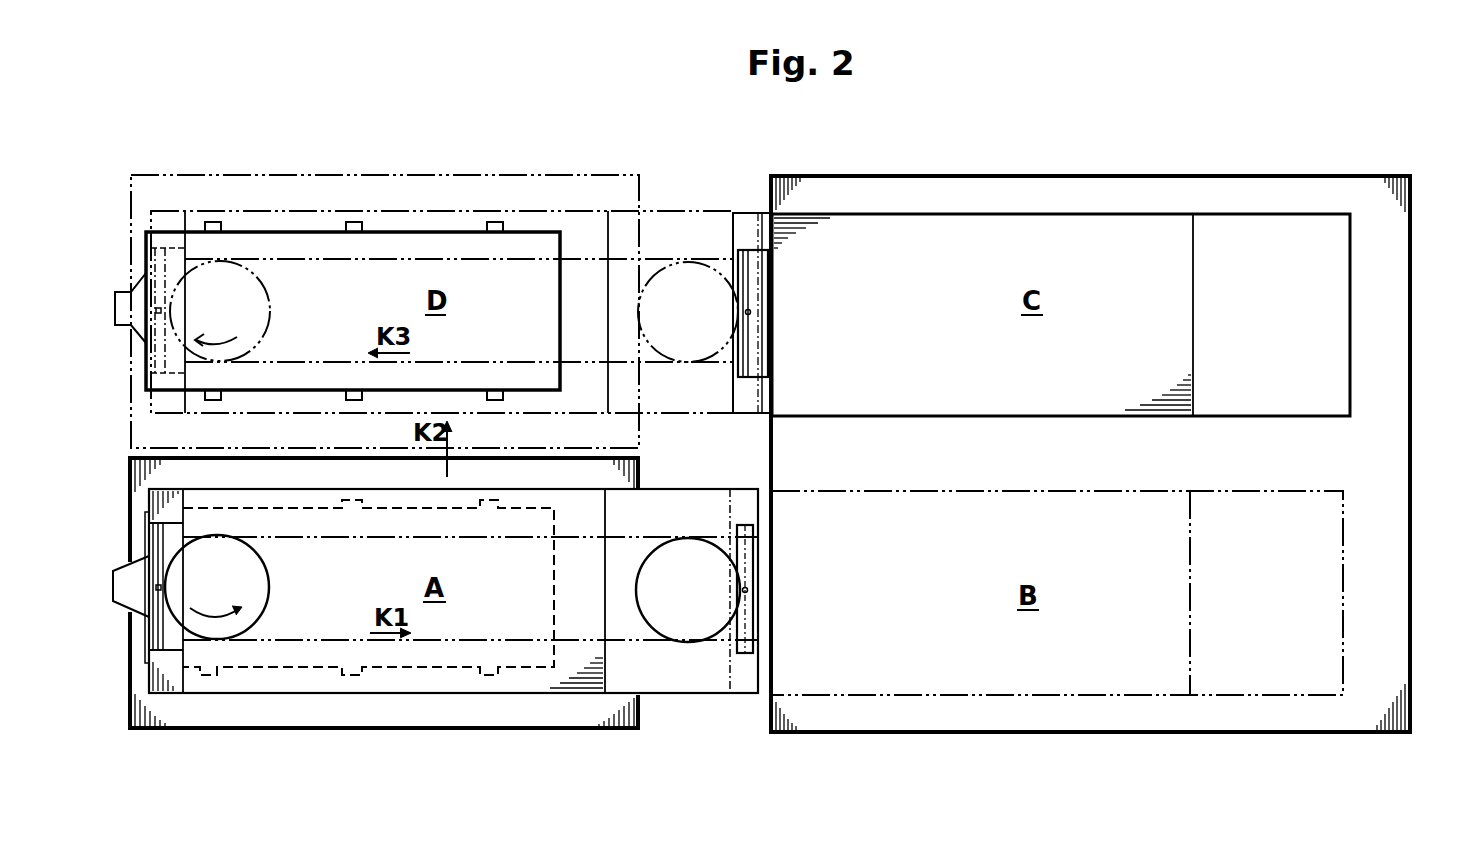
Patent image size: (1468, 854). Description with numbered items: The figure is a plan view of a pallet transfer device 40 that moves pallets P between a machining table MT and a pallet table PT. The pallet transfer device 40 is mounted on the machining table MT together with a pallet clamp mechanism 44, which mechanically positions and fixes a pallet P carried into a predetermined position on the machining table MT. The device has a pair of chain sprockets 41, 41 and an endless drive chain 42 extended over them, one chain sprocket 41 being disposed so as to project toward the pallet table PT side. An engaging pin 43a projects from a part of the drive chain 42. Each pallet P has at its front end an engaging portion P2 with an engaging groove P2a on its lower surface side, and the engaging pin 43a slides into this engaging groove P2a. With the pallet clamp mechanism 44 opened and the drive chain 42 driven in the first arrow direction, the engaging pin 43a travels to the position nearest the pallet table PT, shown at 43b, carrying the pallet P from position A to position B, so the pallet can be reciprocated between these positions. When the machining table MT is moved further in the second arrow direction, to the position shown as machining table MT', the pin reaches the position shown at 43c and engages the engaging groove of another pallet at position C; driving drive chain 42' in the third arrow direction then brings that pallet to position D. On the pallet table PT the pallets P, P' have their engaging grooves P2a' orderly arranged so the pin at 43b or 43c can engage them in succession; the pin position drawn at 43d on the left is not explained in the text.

The pallet transfer device 40 is at (118, 612).
The chain sprocket 41 is at (268, 585).
The endless drive chain 42 is at (470, 608).
The drive chain 42' is at (459, 328).
The engaging pin 43a is at (155, 586).
The engaging pin position 43b is at (748, 590).
The engaging pin position 43c is at (750, 312).
The stop pin 43d is at (157, 309).
The pallet clamp mechanism 44 is at (543, 333).
The pallet P is at (651, 464).
The pallet P' is at (807, 396).
The engaging portion P2 is at (163, 656).
The engaging groove P2a is at (457, 447).
The engaging groove P2a' is at (799, 591).
The pallet table PT is at (1028, 735).
The machining table MT is at (384, 627).
The machining table MT' is at (385, 279).